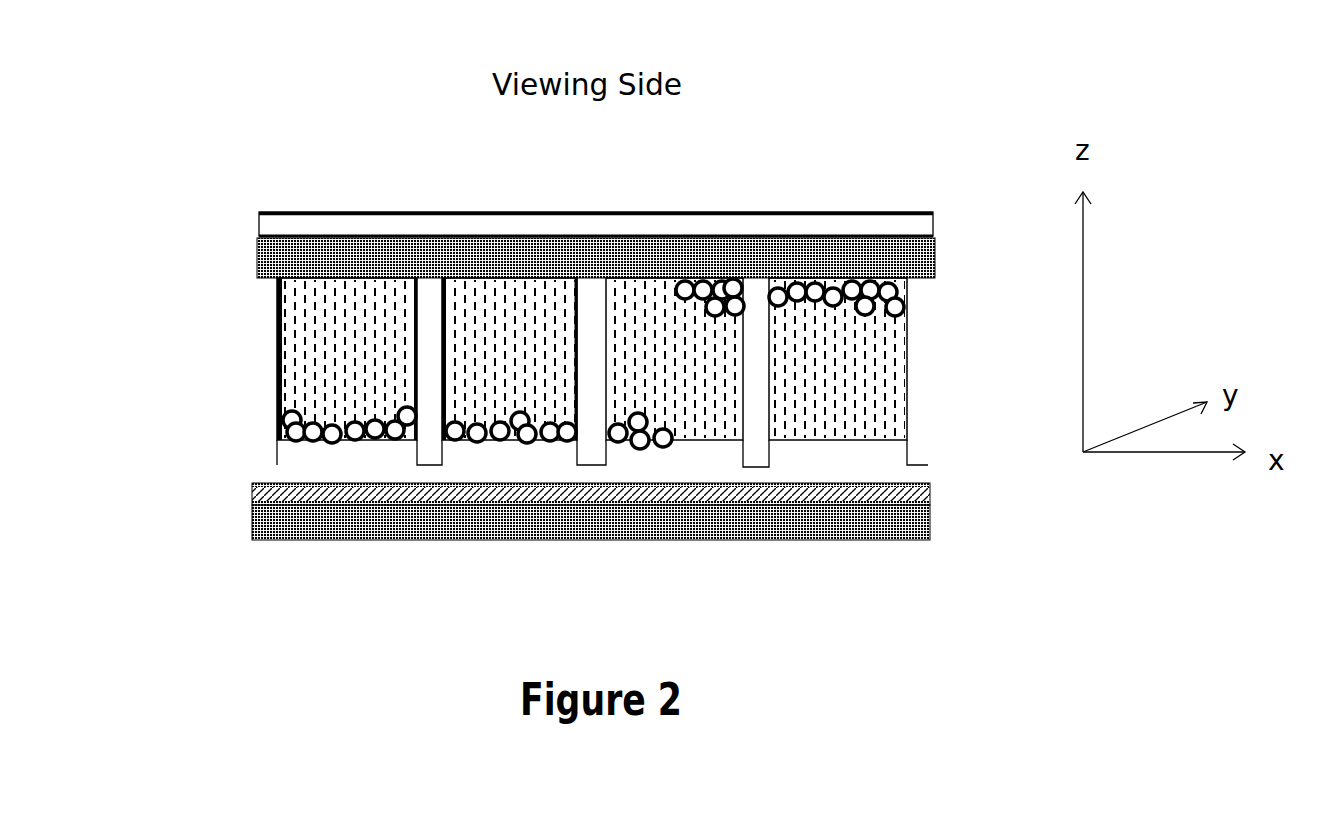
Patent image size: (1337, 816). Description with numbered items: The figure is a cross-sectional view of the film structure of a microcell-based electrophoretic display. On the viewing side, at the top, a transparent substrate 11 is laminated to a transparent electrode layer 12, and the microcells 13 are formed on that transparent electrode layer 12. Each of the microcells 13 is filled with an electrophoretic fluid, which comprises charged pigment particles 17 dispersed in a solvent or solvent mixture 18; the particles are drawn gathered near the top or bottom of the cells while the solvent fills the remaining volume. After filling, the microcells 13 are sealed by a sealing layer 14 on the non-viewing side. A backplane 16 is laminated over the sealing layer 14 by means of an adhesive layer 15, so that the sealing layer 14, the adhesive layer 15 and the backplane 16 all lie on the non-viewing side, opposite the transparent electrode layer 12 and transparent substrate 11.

The transparent substrate 11 is at (257, 224).
The transparent electrode layer 12 is at (937, 257).
The microcells 13 is at (276, 344).
The sealing layer 14 is at (309, 460).
The adhesive layer 15 is at (932, 493).
The backplane 16 is at (277, 518).
The charged pigment particles 17 is at (715, 278).
The solvent or solvent mixture 18 is at (513, 318).